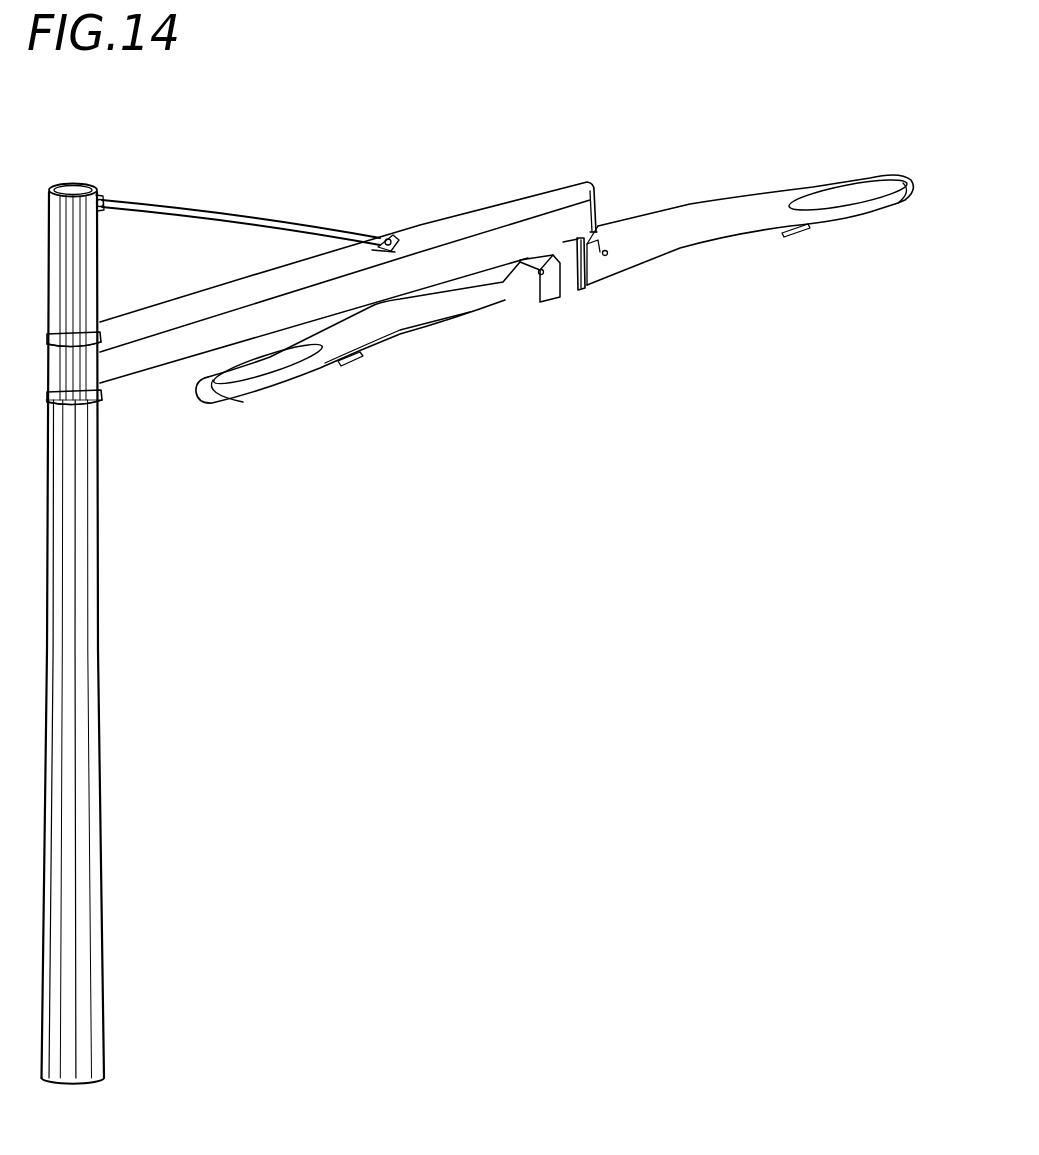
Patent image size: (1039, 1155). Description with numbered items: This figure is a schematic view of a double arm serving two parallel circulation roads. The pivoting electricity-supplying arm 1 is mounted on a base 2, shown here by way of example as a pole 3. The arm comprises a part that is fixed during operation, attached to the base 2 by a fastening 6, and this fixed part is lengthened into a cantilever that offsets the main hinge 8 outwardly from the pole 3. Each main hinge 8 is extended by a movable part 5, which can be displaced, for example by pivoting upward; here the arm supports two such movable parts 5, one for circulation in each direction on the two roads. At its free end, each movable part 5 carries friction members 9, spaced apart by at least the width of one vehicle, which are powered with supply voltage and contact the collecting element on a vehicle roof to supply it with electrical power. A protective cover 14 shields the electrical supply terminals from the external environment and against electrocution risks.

The pivoting electricity-supplying arm 1 is at (592, 78).
The base 2 is at (124, 749).
The pole 3 is at (143, 634).
The movable part 5 is at (330, 412).
The fastening 6 is at (571, 303).
The main hinge 8 is at (538, 271).
The friction members 9 is at (333, 365).
The protective cover 14 is at (372, 317).